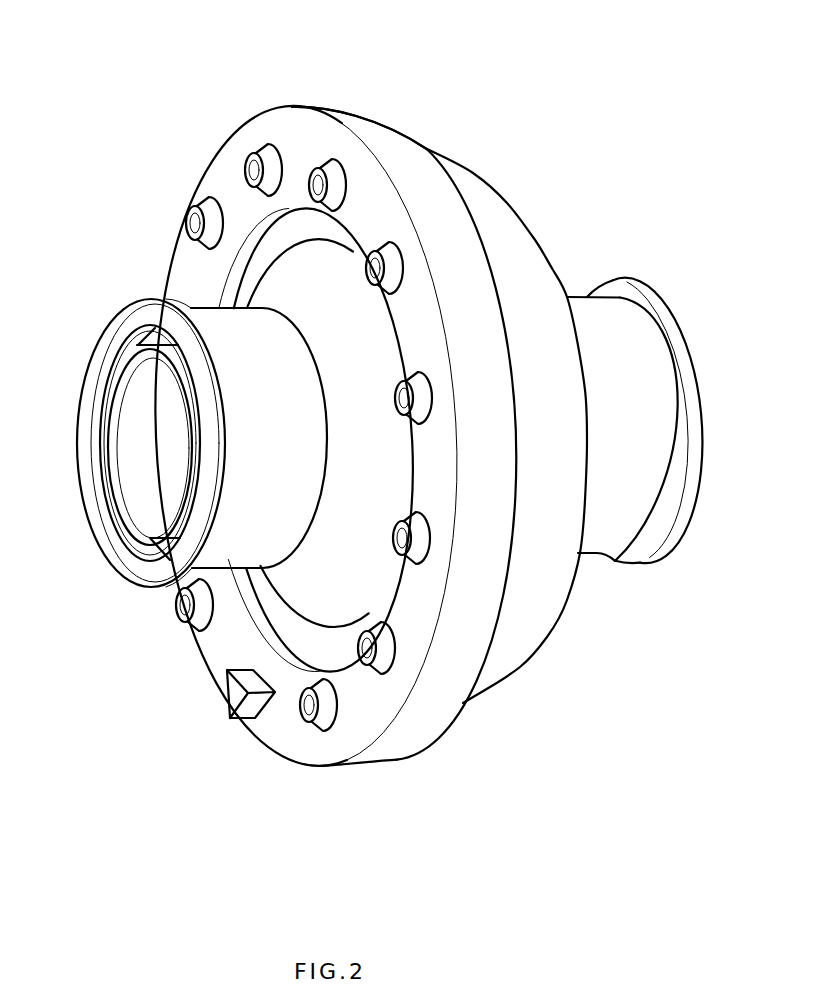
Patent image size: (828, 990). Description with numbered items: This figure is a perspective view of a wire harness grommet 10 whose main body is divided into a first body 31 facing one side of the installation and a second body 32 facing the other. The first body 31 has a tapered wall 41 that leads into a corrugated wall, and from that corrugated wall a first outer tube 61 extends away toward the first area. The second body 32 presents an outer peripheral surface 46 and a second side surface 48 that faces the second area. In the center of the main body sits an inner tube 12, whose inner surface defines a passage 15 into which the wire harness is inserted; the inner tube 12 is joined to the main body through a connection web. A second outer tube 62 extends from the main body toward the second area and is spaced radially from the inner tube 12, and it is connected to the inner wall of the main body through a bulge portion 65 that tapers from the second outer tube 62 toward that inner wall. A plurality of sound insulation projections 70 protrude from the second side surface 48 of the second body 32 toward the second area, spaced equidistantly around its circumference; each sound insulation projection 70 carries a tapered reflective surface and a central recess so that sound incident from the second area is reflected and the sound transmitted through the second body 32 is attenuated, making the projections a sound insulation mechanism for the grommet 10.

The wire harness grommet 10 is at (92, 45).
The inner tube 12 is at (123, 518).
The passage 15 is at (160, 455).
The first body 31 is at (563, 109).
The second body 32 is at (347, 97).
The tapered wall 41 is at (481, 159).
The outer peripheral surface 46 is at (383, 132).
The second side surface 48 is at (288, 130).
The first outer tube 61 is at (597, 308).
The second outer tube 62 is at (218, 322).
The bulge portion 65 is at (293, 268).
The sound insulation projection 70 is at (253, 138).